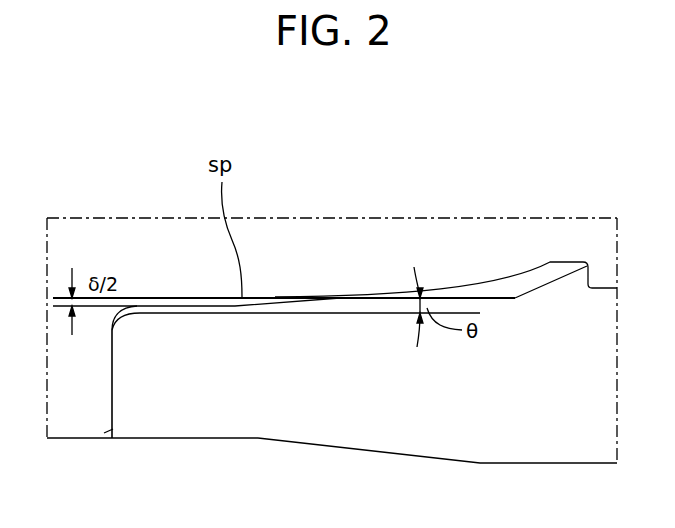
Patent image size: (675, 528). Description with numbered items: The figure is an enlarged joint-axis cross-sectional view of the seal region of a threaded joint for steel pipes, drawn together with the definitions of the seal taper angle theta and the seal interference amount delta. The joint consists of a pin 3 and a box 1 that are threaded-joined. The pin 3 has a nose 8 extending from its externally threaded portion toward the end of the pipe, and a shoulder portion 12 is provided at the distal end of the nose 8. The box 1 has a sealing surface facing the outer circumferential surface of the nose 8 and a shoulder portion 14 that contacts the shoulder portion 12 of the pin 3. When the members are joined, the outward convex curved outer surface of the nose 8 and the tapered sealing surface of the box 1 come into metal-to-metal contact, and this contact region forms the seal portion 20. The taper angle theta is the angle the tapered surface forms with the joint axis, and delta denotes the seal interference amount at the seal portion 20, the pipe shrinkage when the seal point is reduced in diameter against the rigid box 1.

The box 1 is at (380, 242).
The pin 3 is at (425, 445).
The nose 8 is at (225, 425).
The shoulder portion 12 is at (117, 406).
The shoulder portion 14 is at (117, 397).
The seal portion 20 is at (262, 293).